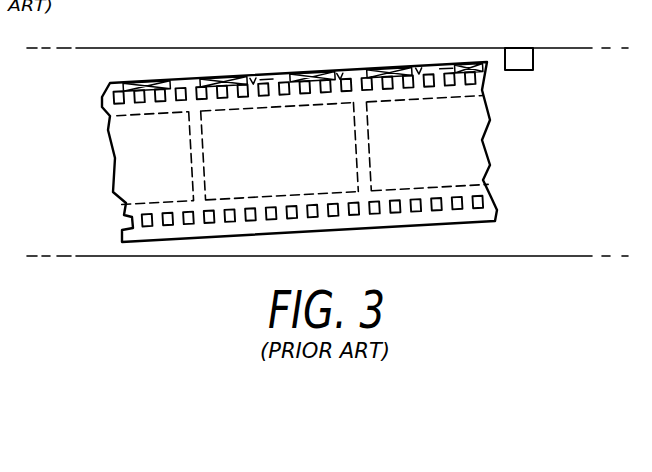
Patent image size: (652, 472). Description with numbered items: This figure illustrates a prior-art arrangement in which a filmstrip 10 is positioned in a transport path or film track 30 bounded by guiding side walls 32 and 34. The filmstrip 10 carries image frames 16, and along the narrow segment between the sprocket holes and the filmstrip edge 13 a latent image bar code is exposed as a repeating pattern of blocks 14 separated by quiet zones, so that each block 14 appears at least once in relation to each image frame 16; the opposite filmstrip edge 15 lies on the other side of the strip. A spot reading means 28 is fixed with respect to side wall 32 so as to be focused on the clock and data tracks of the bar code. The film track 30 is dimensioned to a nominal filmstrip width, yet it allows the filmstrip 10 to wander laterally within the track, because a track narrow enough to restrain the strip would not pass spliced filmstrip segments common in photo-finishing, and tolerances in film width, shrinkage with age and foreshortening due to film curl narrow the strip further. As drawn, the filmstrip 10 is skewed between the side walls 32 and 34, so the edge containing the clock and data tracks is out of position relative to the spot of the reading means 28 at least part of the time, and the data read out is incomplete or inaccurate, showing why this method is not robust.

The filmstrip 10 is at (98, 148).
The filmstrip edge 13 is at (348, 70).
The blocks 14 is at (403, 67).
The opposite filmstrip edge 15 is at (372, 228).
The image frame 16 is at (235, 182).
The spot reading means 28 is at (515, 48).
The transport path or film track 30 is at (583, 156).
The guiding side wall 32 is at (590, 50).
The guiding side wall 34 is at (548, 255).